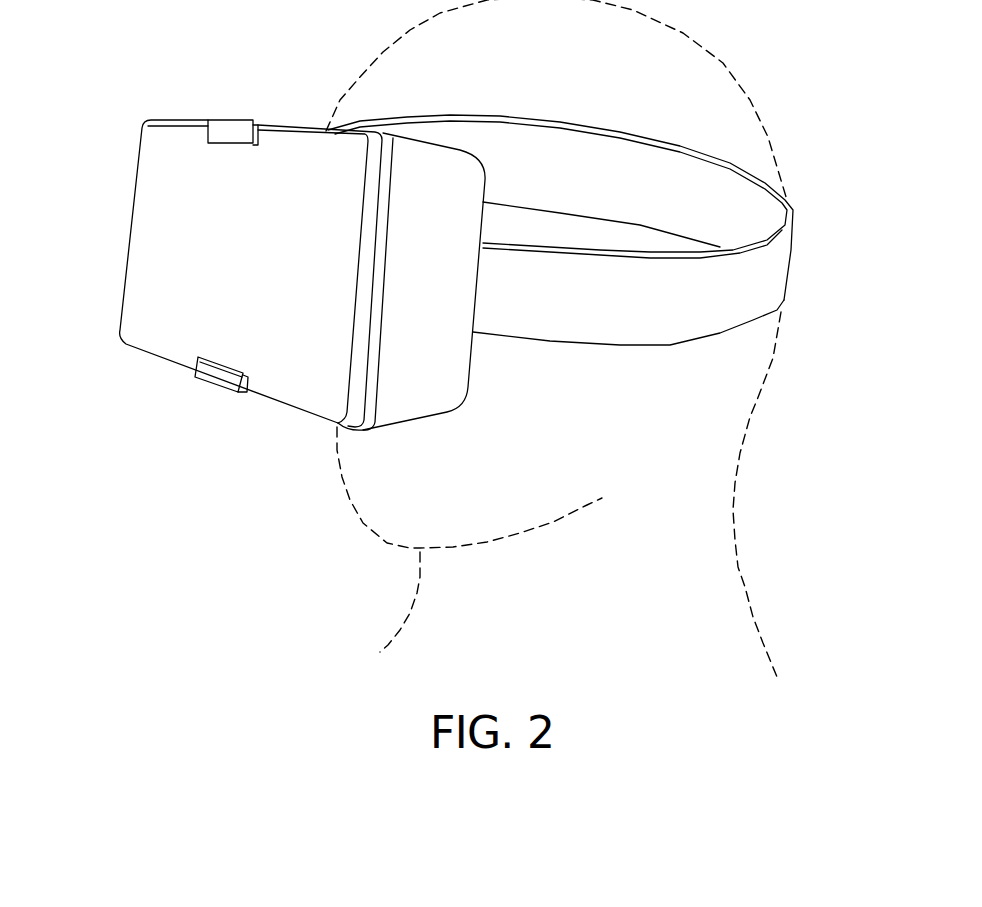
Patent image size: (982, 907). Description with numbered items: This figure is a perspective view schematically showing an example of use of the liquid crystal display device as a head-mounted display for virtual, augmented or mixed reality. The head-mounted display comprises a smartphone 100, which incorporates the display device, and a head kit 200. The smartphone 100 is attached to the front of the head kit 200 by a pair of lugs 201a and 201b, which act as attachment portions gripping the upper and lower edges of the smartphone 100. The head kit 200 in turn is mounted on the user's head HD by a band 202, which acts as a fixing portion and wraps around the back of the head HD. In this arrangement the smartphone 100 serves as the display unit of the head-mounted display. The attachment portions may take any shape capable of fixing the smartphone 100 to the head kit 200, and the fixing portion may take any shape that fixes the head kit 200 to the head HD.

The smartphone 100 is at (145, 215).
The head kit 200 is at (457, 363).
The lug 201a is at (226, 120).
The lug 201b is at (212, 391).
The band 202 is at (779, 257).
The user's head HD is at (730, 72).